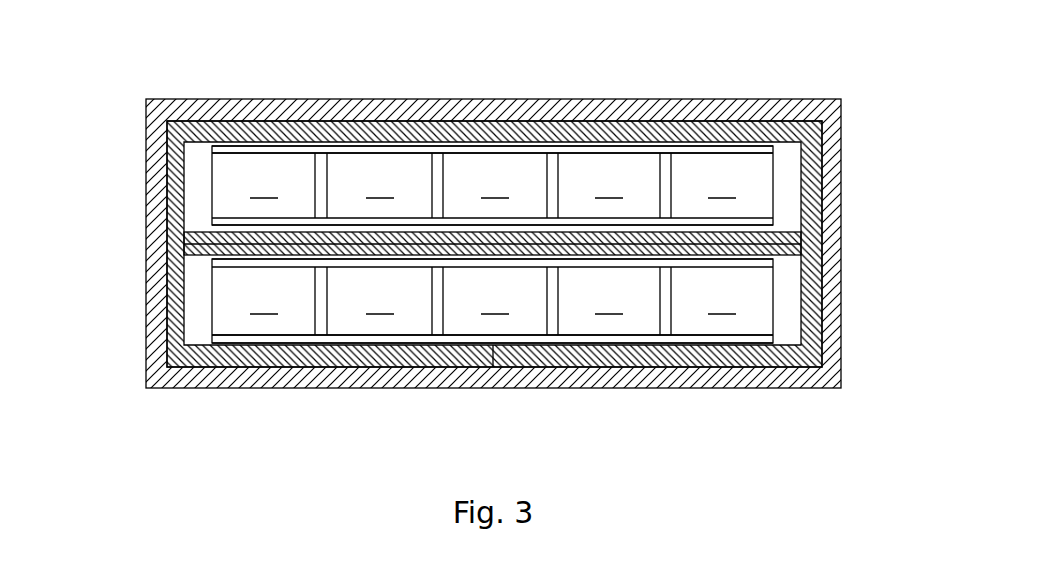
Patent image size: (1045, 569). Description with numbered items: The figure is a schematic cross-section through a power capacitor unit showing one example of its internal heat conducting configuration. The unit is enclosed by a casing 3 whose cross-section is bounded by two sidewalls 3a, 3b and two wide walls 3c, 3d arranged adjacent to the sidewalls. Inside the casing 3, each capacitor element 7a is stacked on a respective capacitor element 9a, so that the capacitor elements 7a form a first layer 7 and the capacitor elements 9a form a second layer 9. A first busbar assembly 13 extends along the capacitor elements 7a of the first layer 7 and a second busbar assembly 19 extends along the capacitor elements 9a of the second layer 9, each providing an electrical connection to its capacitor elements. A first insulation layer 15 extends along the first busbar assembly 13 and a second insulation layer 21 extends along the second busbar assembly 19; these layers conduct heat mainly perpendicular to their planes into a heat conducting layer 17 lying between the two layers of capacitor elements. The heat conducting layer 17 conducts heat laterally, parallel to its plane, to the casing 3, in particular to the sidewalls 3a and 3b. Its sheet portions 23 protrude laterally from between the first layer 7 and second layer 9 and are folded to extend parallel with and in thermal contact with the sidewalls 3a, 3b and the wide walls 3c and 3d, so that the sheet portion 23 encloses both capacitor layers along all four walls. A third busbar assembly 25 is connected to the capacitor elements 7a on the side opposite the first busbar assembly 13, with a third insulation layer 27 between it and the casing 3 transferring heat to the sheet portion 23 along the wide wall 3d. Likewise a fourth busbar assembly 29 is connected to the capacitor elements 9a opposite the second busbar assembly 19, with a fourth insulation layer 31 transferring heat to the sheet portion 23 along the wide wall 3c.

The casing 3 is at (198, 98).
The sidewall 3a is at (145, 350).
The sidewall 3b is at (842, 320).
The wide wall 3c is at (447, 377).
The wide wall 3d is at (493, 142).
The first layer of capacitor elements 7 is at (193, 190).
The capacitor element 7a is at (492, 185).
The second layer of capacitor elements 9 is at (201, 303).
The capacitor element 9a is at (492, 301).
The first busbar assembly 13 is at (218, 224).
The first insulation layer 15 is at (211, 243).
The heat conducting layer 17 is at (207, 250).
The second busbar assembly 19 is at (762, 258).
The second insulation layer 21 is at (815, 250).
The sheet portion 23 is at (176, 152).
The third busbar assembly 25 is at (353, 150).
The third insulation layer 27 is at (392, 144).
The fourth busbar assembly 29 is at (348, 337).
The fourth insulation layer 31 is at (387, 343).